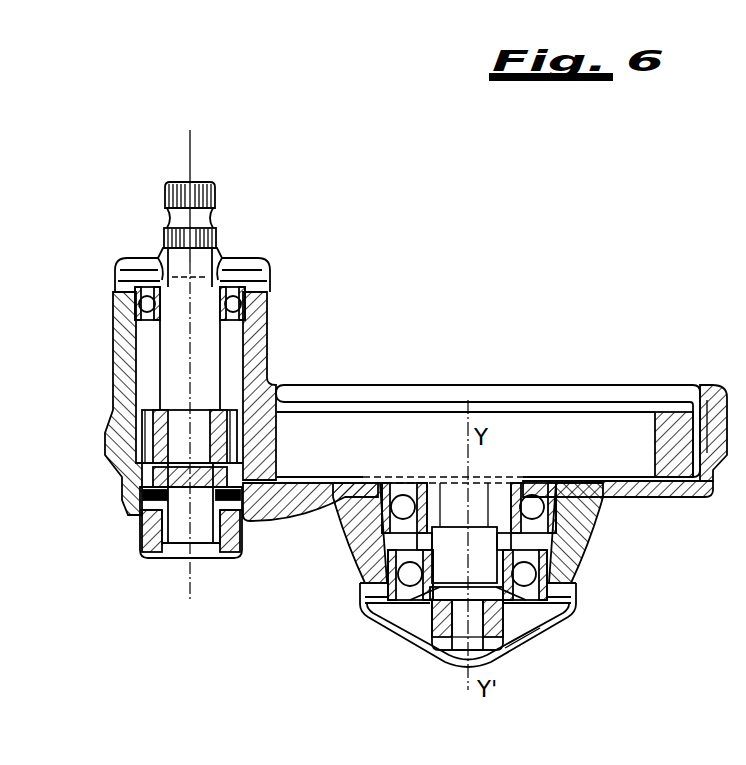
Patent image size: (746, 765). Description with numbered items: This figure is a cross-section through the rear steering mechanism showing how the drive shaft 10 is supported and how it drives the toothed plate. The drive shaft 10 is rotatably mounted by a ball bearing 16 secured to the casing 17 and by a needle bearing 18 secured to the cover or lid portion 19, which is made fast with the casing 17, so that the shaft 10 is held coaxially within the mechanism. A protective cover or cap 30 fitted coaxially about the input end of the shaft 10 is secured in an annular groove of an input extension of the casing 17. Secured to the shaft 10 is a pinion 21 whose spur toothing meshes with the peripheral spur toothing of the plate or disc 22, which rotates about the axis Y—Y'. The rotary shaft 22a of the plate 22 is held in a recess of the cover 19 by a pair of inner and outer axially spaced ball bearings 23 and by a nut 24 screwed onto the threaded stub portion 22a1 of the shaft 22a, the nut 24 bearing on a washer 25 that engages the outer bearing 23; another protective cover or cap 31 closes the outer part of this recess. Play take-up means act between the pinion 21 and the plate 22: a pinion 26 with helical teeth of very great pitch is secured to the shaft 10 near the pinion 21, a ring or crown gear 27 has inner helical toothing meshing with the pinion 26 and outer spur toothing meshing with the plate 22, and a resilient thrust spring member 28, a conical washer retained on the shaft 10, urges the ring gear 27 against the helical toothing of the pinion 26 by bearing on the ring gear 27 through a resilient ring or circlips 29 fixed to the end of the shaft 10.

The drive shaft 10 is at (202, 358).
The ball bearing 16 is at (147, 263).
The casing 17 is at (113, 330).
The needle bearing 18 is at (160, 540).
The cover or lid portion 19 is at (251, 517).
The pinion 21 is at (150, 395).
The plate or disc 22 is at (416, 437).
The rotary shaft of the plate 22a is at (483, 507).
The threaded stub portion 22a1 is at (505, 648).
The ball bearings 23 is at (387, 578).
The nut 24 is at (417, 624).
The washer 25 is at (440, 615).
The pinion with helical teeth 26 is at (190, 566).
The ring or crown gear 27 is at (150, 477).
The resilient thrust spring member 28 is at (165, 502).
The resilient ring or circlips 29 is at (152, 545).
The protective cover or cap 30 is at (233, 262).
The protective cover or cap 31 is at (424, 658).